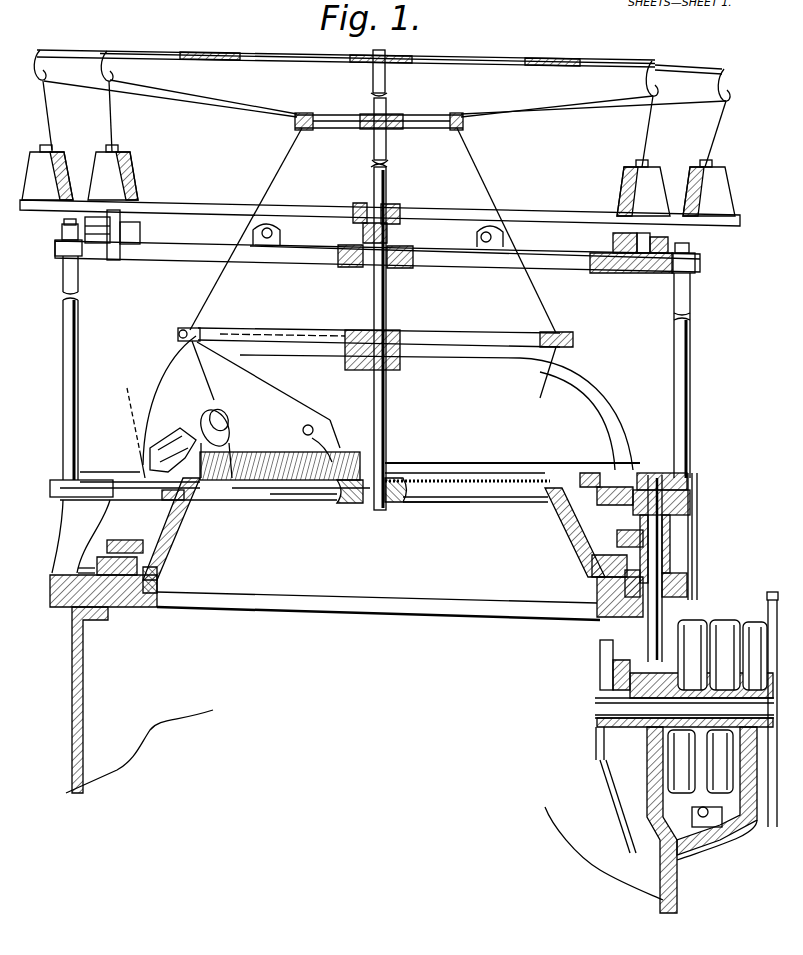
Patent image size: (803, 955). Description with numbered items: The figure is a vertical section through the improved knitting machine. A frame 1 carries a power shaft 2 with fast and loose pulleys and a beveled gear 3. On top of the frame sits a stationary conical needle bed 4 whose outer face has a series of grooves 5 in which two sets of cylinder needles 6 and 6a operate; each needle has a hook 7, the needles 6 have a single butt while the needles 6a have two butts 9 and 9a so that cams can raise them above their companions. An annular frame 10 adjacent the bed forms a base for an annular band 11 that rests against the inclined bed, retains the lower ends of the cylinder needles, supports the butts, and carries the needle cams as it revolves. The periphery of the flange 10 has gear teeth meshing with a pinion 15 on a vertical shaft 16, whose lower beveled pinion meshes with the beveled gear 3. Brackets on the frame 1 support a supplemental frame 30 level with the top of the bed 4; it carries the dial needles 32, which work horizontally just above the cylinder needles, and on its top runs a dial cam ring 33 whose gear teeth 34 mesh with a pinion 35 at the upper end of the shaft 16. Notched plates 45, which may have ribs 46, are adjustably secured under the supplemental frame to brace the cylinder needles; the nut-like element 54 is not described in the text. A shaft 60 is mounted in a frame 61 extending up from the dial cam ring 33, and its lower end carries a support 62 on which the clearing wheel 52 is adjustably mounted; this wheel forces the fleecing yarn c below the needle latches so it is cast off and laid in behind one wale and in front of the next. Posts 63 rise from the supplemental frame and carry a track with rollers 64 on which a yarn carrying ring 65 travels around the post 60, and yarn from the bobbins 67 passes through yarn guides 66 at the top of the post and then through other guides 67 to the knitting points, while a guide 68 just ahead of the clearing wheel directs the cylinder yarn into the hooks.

The frame 1 is at (677, 888).
The power shaft 2 is at (610, 707).
The beveled gear 3 is at (605, 662).
The conical needle bed 4 is at (354, 685).
The grooves 5 is at (175, 532).
The needles 6 is at (560, 332).
The needles 6a is at (371, 531).
The hooks 7 is at (550, 473).
The butt 9 is at (590, 563).
The butt 9a is at (342, 530).
The annular frame 10 is at (101, 558).
The annular band 11 is at (89, 548).
The pinion 15 is at (688, 588).
The vertical shaft 16 is at (663, 546).
The supplemental frame 30 is at (690, 504).
The dial needles 32 is at (173, 438).
The dial cam ring 33 is at (110, 453).
The gear teeth 34 is at (80, 472).
The pinion 35 is at (688, 482).
The notched plates 45 is at (170, 497).
The ribs 46 is at (122, 423).
The clearing wheel 52 is at (232, 428).
The nut 54 is at (375, 251).
The shaft 60 is at (396, 280).
The frame 61 is at (385, 359).
The support 62 is at (426, 502).
The posts 63 is at (376, 368).
The rollers 64 is at (377, 250).
The yarn carrying ring 65 is at (174, 212).
The yarn guides 66 is at (190, 48).
The bobbins 67 is at (116, 152).
The guide 68 is at (332, 442).
The fleecing yarn c is at (201, 372).